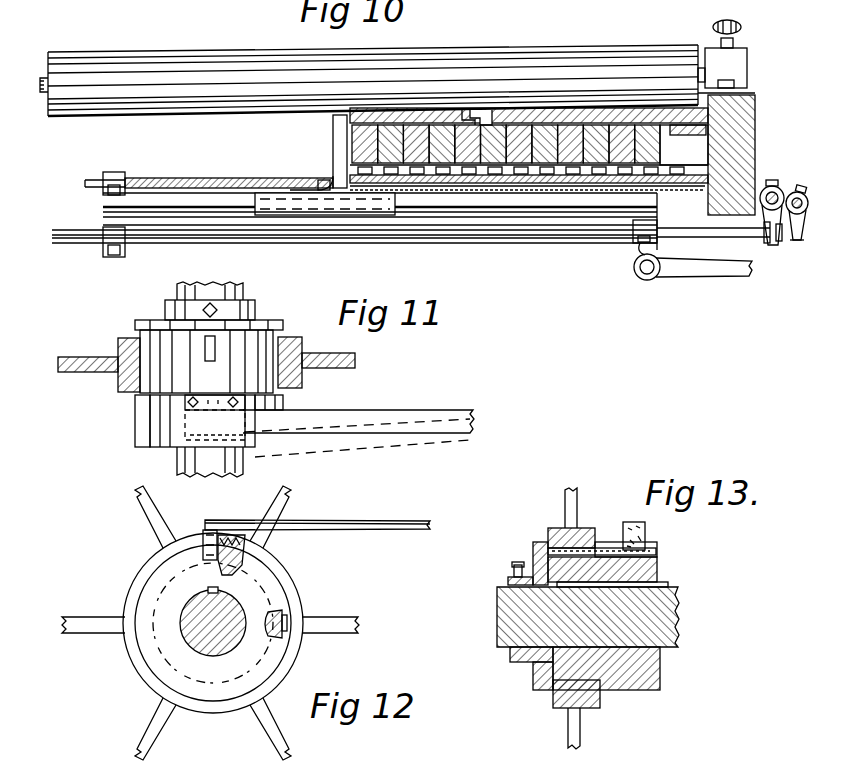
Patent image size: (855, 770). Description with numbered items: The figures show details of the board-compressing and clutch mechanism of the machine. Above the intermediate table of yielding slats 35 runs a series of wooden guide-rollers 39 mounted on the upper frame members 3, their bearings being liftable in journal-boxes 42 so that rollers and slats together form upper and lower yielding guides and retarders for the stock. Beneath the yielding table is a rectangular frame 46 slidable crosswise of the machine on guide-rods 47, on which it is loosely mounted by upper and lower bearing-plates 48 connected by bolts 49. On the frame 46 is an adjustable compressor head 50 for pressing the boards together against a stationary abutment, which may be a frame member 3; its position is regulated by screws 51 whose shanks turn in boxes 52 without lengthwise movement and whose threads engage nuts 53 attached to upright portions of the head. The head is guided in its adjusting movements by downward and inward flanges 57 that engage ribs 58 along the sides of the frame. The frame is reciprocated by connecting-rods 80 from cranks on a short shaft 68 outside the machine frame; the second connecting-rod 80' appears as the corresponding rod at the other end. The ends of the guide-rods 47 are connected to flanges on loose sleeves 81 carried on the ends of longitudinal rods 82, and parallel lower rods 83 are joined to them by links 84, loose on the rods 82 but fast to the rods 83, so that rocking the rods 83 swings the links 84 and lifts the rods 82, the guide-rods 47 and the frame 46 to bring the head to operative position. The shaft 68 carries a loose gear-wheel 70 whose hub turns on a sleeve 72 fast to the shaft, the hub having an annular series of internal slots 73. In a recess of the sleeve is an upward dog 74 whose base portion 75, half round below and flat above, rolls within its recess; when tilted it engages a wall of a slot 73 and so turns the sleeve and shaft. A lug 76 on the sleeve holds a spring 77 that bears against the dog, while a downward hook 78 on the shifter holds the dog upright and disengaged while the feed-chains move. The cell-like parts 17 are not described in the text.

In FIG. 10, the upper horizontal frame member 3 is at (757, 105).
In FIG. 10, the type bars / cells 17 is at (407, 110).
In FIG. 10, the yielding slat 35 is at (473, 108).
In FIG. 10, the guide-roller 39 is at (160, 52).
In FIG. 10, the journal-box 42 is at (748, 60).
In FIG. 10, the rectangular frame 46 is at (103, 210).
In FIG. 10, the guide-rod 47 is at (342, 243).
In FIG. 10, the bearing-plate 48 is at (633, 238).
In FIG. 10, the bolt 49 is at (640, 245).
In FIG. 10, the compressor head 50 is at (333, 133).
In FIG. 10, the screw 51 is at (212, 178).
In FIG. 10, the box 52 is at (110, 172).
In FIG. 10, the nut 53 is at (322, 180).
In FIG. 10, the flange 57 is at (258, 212).
In FIG. 10, the rib 58 is at (482, 203).
In FIG. 11, the short shaft 68 is at (215, 282).
In FIG. 12, the short shaft 68 is at (190, 640).
In FIG. 13, the short shaft 68 is at (680, 615).
In FIG. 11, the loose gear-wheel 70 is at (80, 355).
In FIG. 12, the loose gear-wheel 70 is at (82, 617).
In FIG. 13, the loose gear-wheel 70 is at (576, 488).
In FIG. 11, the sleeve 72 is at (135, 427).
In FIG. 12, the sleeve 72 is at (165, 580).
In FIG. 13, the sleeve 72 is at (662, 670).
In FIG. 11, the internal slot 73 is at (117, 375).
In FIG. 12, the internal slot 73 is at (288, 625).
In FIG. 13, the internal slot 73 is at (533, 548).
In FIG. 12, the dog 74 is at (212, 532).
In FIG. 13, the dog 74 is at (647, 528).
In FIG. 11, the base portion 75 is at (205, 350).
In FIG. 12, the base portion 75 is at (245, 560).
In FIG. 13, the base portion 75 is at (660, 565).
In FIG. 12, the lug 76 is at (250, 541).
In FIG. 11, the spring 77 is at (255, 445).
In FIG. 11, the hook 78 is at (195, 425).
In FIG. 10, the connecting-rod 80 is at (693, 290).
In FIG. 10, the lever 80' is at (650, 9).
In FIG. 10, the loose sleeve 81 is at (772, 248).
In FIG. 10, the longitudinal rod 82 is at (773, 185).
In FIG. 10, the rocking rod 83 is at (799, 192).
In FIG. 10, the link 84 is at (796, 242).